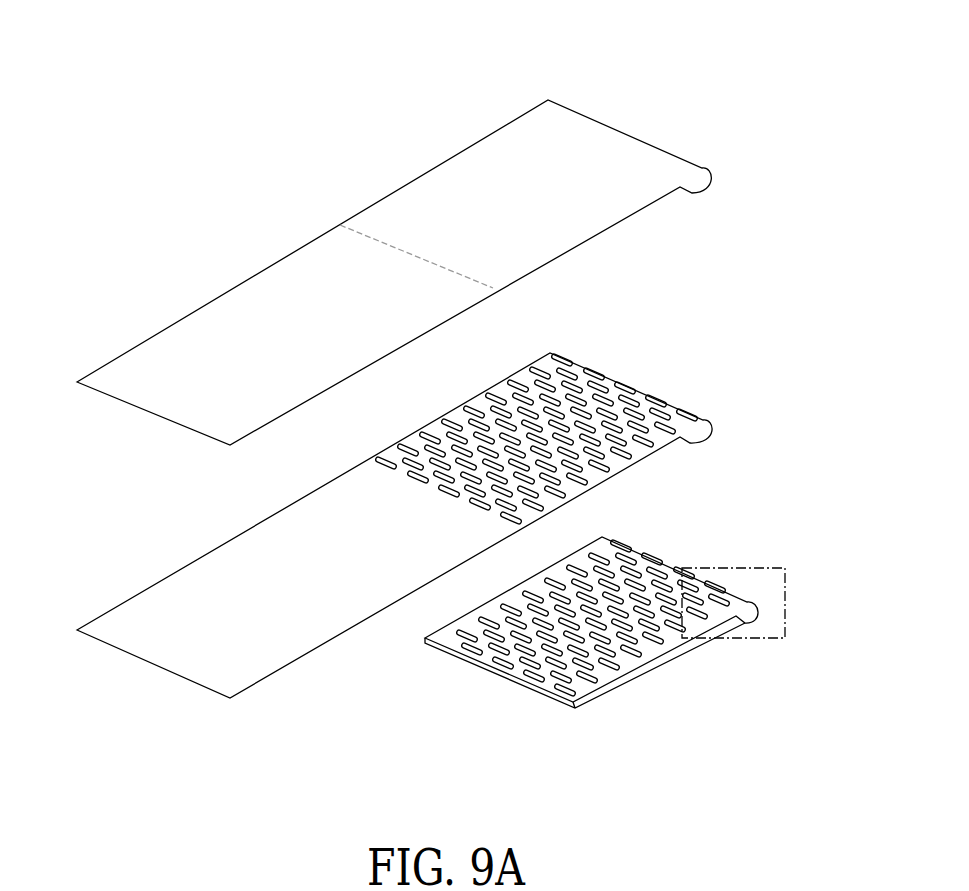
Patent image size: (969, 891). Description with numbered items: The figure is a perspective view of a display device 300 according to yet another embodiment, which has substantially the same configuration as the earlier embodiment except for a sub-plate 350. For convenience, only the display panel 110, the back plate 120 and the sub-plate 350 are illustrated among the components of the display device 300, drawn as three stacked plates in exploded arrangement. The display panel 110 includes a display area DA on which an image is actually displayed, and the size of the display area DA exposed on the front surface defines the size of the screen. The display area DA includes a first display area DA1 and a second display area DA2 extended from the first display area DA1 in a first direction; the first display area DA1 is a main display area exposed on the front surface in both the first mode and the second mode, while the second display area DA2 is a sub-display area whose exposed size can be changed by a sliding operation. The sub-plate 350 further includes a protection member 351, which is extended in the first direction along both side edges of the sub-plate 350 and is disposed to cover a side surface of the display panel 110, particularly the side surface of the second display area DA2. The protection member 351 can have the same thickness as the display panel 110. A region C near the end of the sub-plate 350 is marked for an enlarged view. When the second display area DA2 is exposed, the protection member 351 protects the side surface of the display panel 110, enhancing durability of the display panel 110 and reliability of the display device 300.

The display device 300 is at (790, 43).
The display panel 110 is at (543, 91).
The back plate 120 is at (693, 412).
The sub-plate 350 is at (643, 553).
The protection member 351 is at (668, 657).
The region C is at (785, 568).
The display area DA is at (306, 131).
The first display area DA1 is at (323, 238).
The second display area DA2 is at (380, 210).